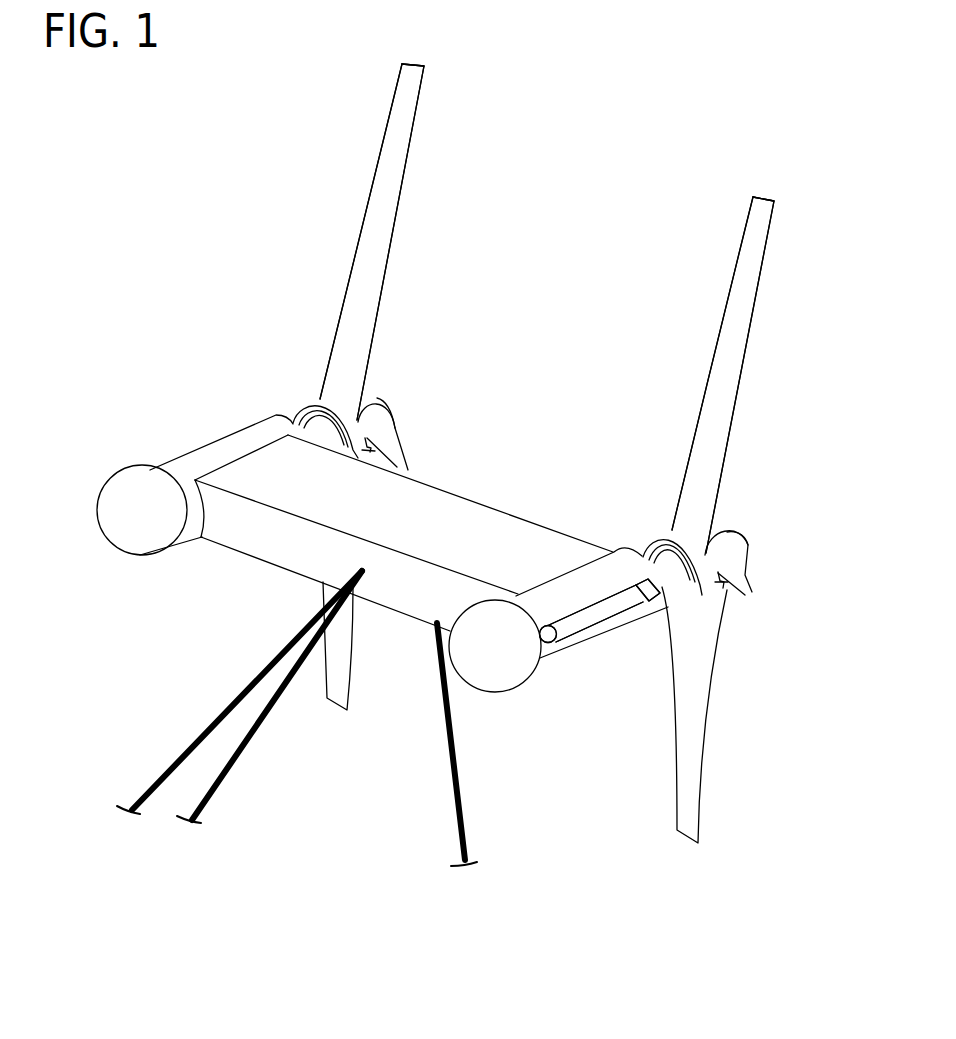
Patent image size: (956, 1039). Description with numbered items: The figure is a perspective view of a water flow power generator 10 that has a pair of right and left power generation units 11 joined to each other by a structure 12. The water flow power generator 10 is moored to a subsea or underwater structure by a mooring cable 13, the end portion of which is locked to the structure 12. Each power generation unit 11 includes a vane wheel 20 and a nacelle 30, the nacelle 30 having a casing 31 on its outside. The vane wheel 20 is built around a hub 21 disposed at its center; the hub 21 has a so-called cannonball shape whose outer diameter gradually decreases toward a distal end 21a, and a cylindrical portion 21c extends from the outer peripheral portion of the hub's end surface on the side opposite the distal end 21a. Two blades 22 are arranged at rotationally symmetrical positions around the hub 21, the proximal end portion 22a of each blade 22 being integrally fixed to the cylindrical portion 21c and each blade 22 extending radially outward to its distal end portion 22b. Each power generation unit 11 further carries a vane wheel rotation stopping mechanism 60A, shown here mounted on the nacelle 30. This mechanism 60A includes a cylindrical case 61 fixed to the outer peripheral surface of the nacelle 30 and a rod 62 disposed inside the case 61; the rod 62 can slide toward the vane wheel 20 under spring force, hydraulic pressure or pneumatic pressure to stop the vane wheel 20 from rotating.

The water flow power generator 10 is at (226, 239).
The power generation unit 11 is at (217, 441).
The structure 12 is at (510, 516).
The mooring cable 13 is at (230, 760).
The vane wheel 20 is at (373, 331).
The hub 21 is at (392, 432).
The distal end 21a is at (396, 412).
The cylindrical portion 21c is at (380, 440).
The blade 22 is at (378, 192).
The proximal end portion 22a is at (320, 404).
The distal end portion 22b is at (402, 74).
The nacelle 30 is at (177, 457).
The casing 31 is at (210, 527).
The vane wheel rotation stopping mechanism 60A is at (660, 733).
The case 61 is at (583, 641).
The rod 62 is at (652, 602).